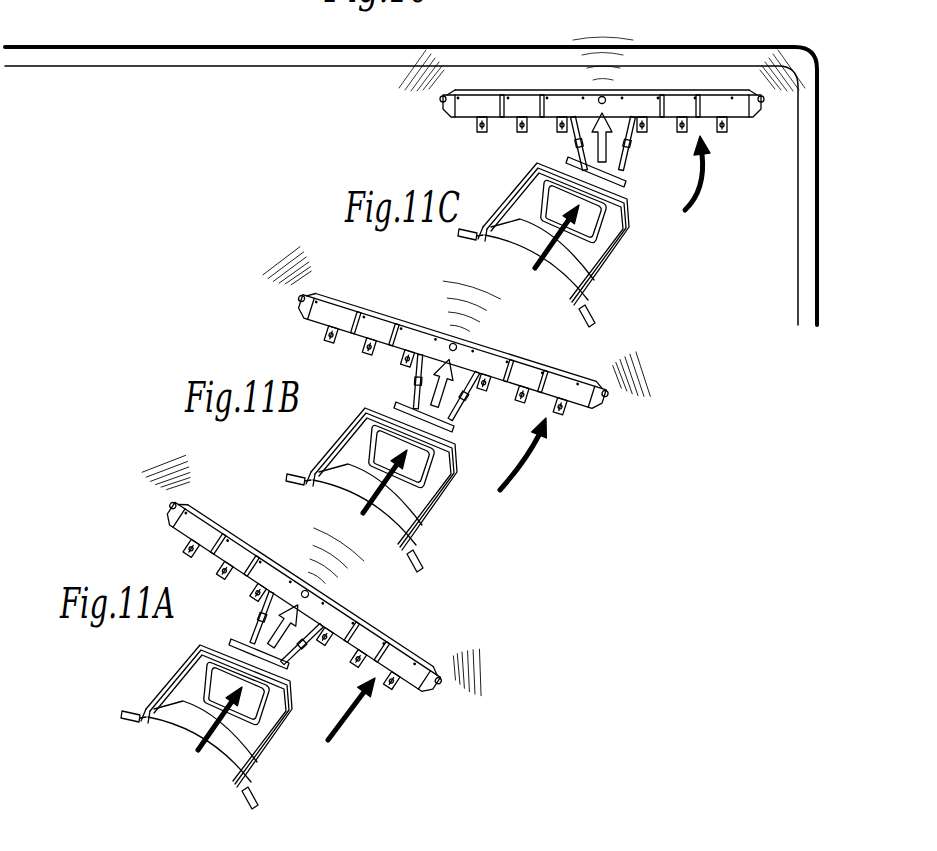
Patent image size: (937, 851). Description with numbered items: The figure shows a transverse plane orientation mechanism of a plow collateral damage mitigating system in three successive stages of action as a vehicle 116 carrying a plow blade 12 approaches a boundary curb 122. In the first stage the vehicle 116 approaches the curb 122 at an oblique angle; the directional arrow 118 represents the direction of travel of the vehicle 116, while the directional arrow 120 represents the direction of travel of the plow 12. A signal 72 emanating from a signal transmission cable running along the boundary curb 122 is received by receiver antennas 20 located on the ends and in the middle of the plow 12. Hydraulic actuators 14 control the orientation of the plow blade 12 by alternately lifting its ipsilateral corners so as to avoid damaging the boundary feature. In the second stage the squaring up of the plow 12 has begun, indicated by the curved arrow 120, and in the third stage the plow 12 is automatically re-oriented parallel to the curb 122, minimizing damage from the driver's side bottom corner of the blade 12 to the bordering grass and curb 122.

In FIG. 11C, the plow blade 12 is at (522, 105).
In FIG. 11B, the plow blade 12 is at (335, 338).
In FIG. 11A, the plow blade 12 is at (405, 672).
In FIG. 11C, the hydraulic actuators 14 is at (573, 140).
In FIG. 11B, the hydraulic actuators 14 is at (415, 398).
In FIG. 11A, the hydraulic actuators 14 is at (253, 630).
In FIG. 11C, the receiver antennas 20 is at (441, 101).
In FIG. 11B, the receiver antennas 20 is at (300, 300).
In FIG. 11A, the receiver antennas 20 is at (170, 508).
In FIG. 11C, the signal 72 is at (588, 42).
In FIG. 11B, the signal 72 is at (297, 268).
In FIG. 11A, the signal 72 is at (180, 468).
In FIG. 11C, the vehicle 116 is at (607, 251).
In FIG. 11B, the vehicle 116 is at (435, 496).
In FIG. 11A, the vehicle 116 is at (270, 733).
In FIG. 11C, the directional arrow 118 is at (540, 253).
In FIG. 11B, the directional arrow 118 is at (368, 498).
In FIG. 11A, the directional arrow 118 is at (203, 735).
In FIG. 11C, the directional arrow 120 is at (703, 193).
In FIG. 11B, the directional arrow 120 is at (527, 468).
In FIG. 11A, the directional arrow 120 is at (352, 716).
In FIG. 11C, the curb 122 is at (808, 122).